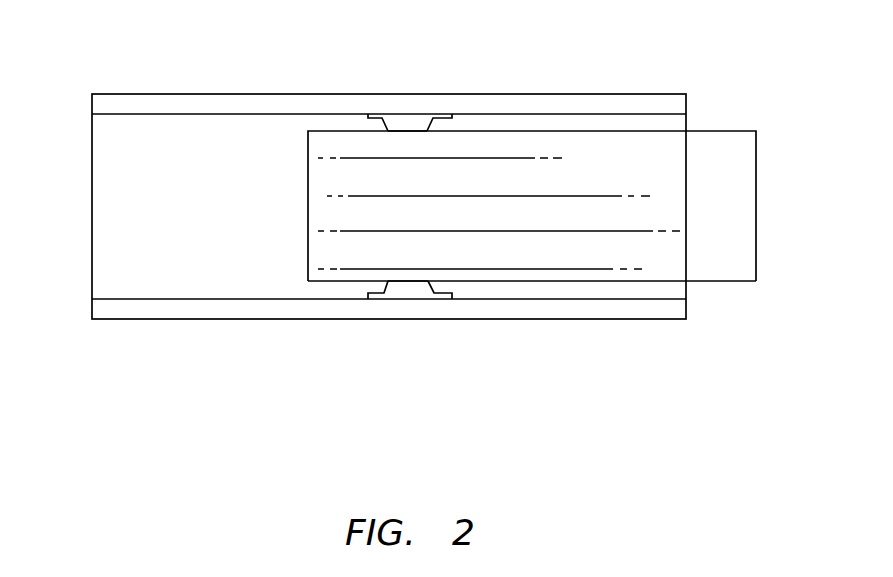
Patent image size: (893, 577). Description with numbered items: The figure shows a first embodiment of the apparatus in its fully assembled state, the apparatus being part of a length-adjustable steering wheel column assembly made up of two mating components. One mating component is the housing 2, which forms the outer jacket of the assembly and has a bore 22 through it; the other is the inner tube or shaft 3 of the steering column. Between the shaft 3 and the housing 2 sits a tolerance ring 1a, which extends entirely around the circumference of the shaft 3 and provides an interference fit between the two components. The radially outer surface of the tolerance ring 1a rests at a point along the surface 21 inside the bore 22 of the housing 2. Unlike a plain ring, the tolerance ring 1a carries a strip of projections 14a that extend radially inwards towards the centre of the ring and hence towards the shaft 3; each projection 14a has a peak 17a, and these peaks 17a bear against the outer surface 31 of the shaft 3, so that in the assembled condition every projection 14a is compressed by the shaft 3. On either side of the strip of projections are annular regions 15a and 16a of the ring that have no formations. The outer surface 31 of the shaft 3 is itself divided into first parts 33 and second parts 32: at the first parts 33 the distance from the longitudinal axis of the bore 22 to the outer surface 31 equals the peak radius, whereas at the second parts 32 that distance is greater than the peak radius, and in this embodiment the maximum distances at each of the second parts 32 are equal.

The tolerance ring 1a is at (397, 122).
The housing 2 is at (687, 97).
The inner tube (shaft) 3 is at (757, 165).
The projections 14a is at (405, 292).
The annular region 15a is at (377, 300).
The annular region 16a is at (443, 300).
The peak 17a is at (413, 130).
The surface 21 is at (135, 117).
The bore 22 is at (678, 123).
The outer surface 31 is at (548, 281).
The second parts 32 is at (367, 215).
The first parts 33 is at (367, 250).